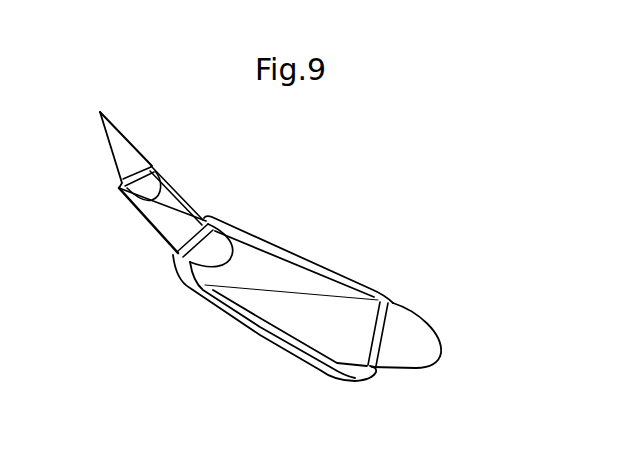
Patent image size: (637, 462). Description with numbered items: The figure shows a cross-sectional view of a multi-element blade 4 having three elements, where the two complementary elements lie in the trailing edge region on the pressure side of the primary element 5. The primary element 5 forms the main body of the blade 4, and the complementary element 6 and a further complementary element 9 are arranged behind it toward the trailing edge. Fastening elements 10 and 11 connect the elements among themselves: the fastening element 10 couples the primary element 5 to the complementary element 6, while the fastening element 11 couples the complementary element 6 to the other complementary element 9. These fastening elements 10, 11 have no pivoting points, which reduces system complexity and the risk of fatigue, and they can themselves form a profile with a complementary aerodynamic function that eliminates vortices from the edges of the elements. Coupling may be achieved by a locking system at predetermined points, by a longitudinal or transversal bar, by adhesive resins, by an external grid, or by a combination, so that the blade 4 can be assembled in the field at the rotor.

The multi-element blade 4 is at (432, 316).
The primary element 5 is at (417, 352).
The complementary element 6 is at (170, 222).
The complementary element 9 is at (128, 157).
The fastening element 10 is at (333, 273).
The fastening element 11 is at (180, 191).